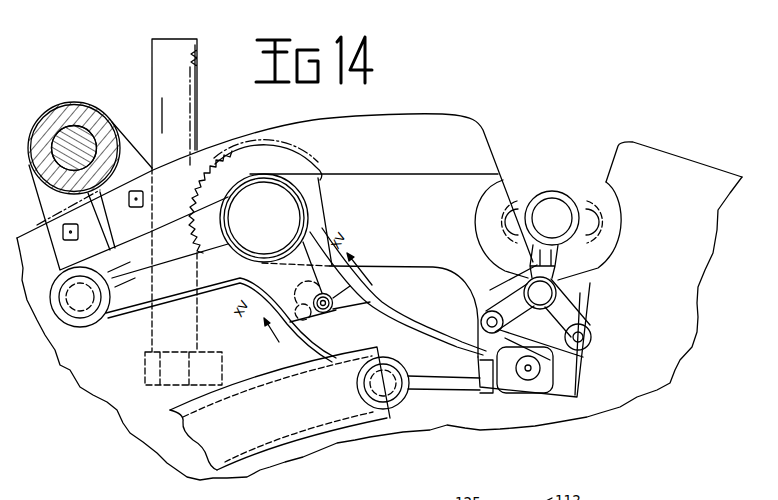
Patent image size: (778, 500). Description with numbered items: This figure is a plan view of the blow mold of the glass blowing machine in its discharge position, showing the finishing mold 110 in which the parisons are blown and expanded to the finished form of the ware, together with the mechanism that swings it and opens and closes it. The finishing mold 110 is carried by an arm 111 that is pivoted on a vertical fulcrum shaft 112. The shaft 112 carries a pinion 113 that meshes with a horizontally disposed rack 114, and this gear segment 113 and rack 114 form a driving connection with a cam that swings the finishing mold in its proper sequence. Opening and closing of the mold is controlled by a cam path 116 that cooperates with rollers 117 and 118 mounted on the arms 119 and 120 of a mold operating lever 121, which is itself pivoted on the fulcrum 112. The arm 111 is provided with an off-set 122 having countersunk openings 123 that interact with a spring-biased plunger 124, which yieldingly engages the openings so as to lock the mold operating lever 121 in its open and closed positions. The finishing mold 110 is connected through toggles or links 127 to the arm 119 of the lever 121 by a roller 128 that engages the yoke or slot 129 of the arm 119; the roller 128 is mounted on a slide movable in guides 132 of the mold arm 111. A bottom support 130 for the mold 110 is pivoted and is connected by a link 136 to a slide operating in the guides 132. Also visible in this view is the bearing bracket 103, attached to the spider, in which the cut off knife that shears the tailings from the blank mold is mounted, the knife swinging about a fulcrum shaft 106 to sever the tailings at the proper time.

The bearing bracket 103 is at (38, 112).
The fulcrum shaft 106 is at (82, 126).
The finishing mold 110 is at (627, 224).
The arm 111 is at (404, 180).
The vertical fulcrum shaft 112 is at (278, 228).
The pinion 113 is at (213, 163).
The rack 114 is at (196, 52).
The cam path 116 is at (293, 420).
The roller 117 is at (408, 400).
The roller 118 is at (84, 325).
The arm 119 is at (432, 372).
The arm 120 is at (137, 298).
The mold operating lever 121 is at (241, 283).
The off-set 122 is at (370, 285).
The countersunk opening 123 is at (316, 313).
The plunger 124 is at (345, 316).
The toggle 127 is at (592, 335).
The roller 128 is at (540, 373).
The yoke 129 is at (551, 380).
The bottom support 130 is at (550, 193).
The guide 132 is at (575, 359).
The link 136 is at (595, 287).